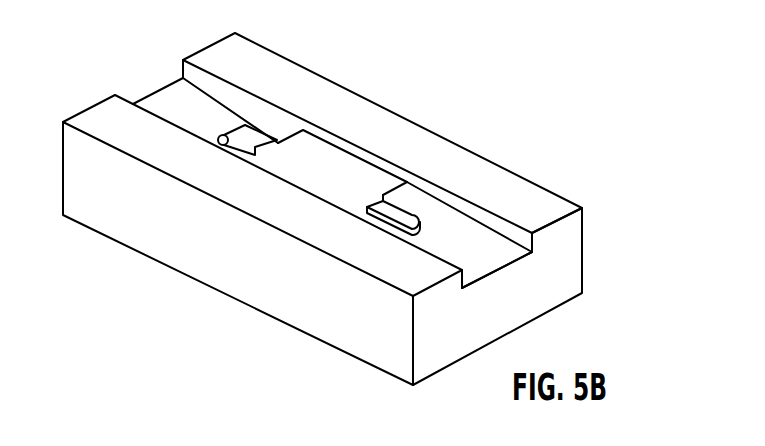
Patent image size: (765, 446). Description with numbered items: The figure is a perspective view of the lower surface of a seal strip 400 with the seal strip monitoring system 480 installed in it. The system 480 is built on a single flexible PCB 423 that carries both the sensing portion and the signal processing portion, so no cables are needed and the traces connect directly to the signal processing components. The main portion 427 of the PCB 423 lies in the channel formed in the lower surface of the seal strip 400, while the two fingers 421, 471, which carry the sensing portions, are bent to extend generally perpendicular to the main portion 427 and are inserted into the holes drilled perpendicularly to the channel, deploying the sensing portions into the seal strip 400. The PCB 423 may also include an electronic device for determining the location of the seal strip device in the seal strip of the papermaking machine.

The seal strip 400 is at (573, 240).
The finger 421 is at (219, 136).
The PCB 423 is at (355, 141).
The main portion 427 is at (378, 168).
The finger 471 is at (426, 221).
The seal strip monitoring system 480 is at (429, 106).